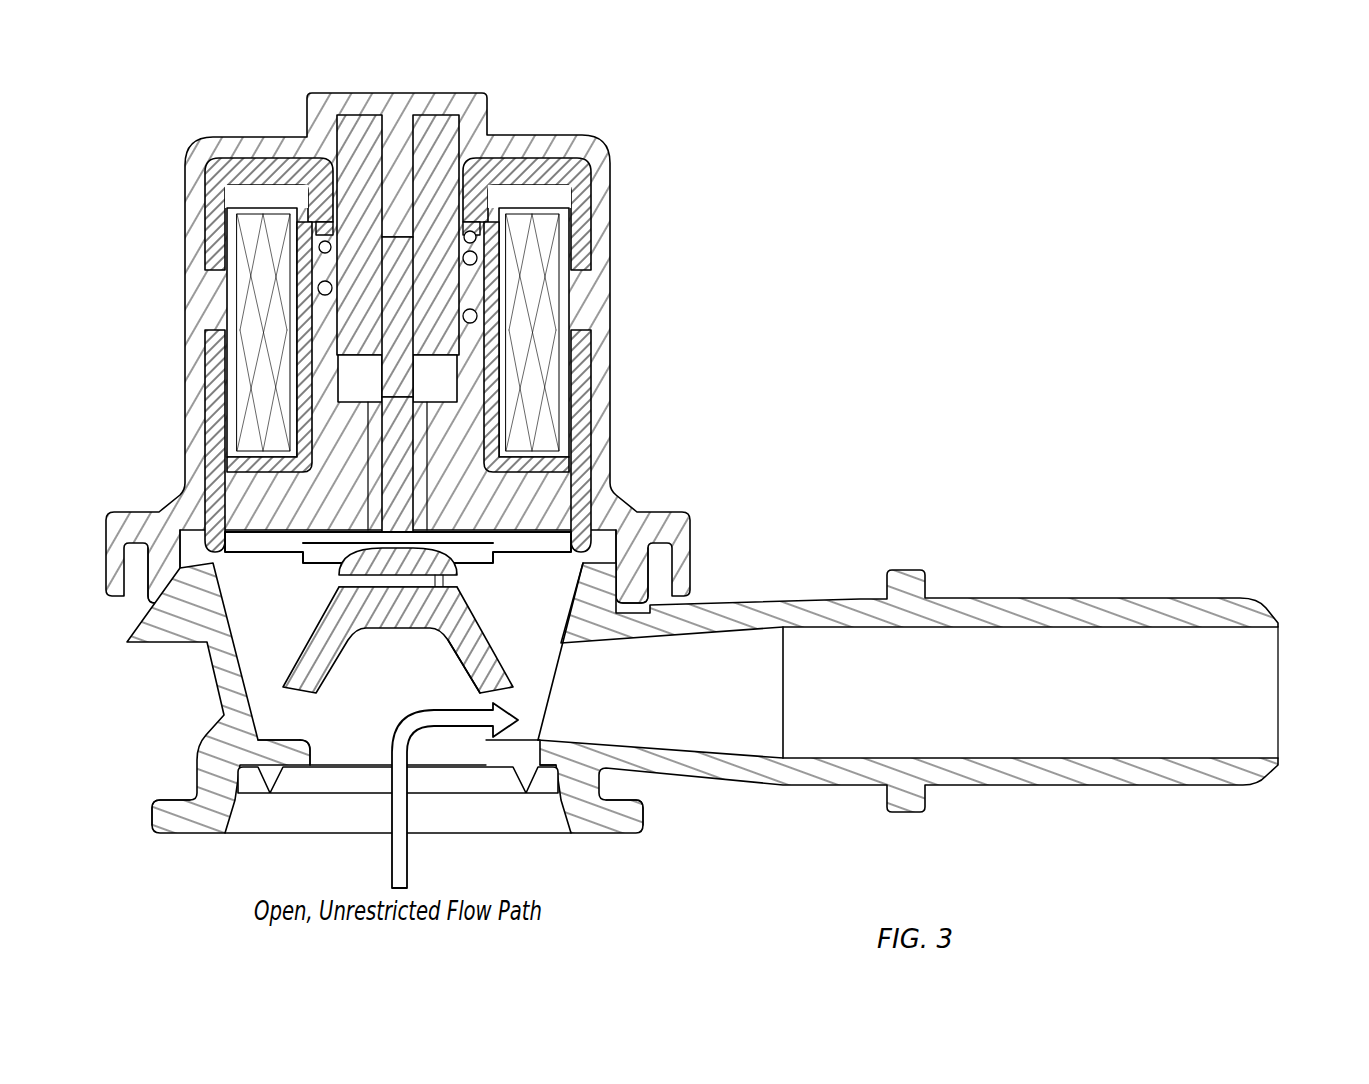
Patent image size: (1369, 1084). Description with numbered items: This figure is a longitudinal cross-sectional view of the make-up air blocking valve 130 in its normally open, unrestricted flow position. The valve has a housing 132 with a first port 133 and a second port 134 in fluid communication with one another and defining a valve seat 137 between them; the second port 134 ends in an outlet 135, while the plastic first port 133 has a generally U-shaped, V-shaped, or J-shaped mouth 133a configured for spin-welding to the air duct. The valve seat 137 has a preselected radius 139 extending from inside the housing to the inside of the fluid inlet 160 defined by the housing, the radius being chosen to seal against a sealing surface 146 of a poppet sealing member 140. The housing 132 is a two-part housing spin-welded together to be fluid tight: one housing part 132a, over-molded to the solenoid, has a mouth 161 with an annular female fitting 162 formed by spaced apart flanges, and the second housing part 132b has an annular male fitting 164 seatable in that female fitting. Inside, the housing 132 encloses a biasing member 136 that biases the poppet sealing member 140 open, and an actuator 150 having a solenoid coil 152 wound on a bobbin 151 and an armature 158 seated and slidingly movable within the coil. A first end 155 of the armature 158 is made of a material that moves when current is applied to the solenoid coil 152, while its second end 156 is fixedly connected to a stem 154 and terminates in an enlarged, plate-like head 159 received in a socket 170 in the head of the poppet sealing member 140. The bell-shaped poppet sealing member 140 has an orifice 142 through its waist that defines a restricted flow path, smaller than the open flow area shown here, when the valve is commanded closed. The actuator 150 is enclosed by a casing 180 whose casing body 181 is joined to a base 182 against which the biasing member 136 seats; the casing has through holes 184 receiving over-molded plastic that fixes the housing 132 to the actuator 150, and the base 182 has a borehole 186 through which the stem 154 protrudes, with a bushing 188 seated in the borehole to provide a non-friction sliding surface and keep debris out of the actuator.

The make-up air blocking valve 130 is at (696, 474).
The housing 132 is at (696, 494).
The housing part 132a is at (200, 318).
The second housing part 132b is at (687, 729).
The first port 133 is at (182, 826).
The mouth 133a is at (612, 826).
The second port 134 is at (937, 647).
The outlet 135 is at (1279, 717).
The biasing member 136 is at (325, 287).
The valve seat 137 is at (508, 753).
The preselected radius 139 is at (314, 745).
The poppet sealing member 140 is at (428, 640).
The orifice 142 is at (468, 642).
The sealing surface 146 is at (305, 695).
The actuator 150 is at (427, 373).
The bobbin 151 is at (569, 198).
The solenoid coil 152 is at (346, 340).
The stem 154 is at (398, 493).
The first end 155 is at (397, 257).
The second end 156 is at (470, 233).
The armature 158 is at (356, 128).
The plate-like head 159 is at (425, 580).
The fluid inlet 160 is at (342, 758).
The mouth 161 is at (618, 592).
The annular female fitting 162 is at (688, 570).
The annular male fitting 164 is at (128, 594).
The socket 170 is at (365, 583).
The casing 180 is at (427, 324).
The casing body 181 is at (213, 208).
The base 182 is at (237, 498).
The through holes 184 is at (581, 272).
The borehole 186 is at (427, 416).
The bushing 188 is at (377, 448).